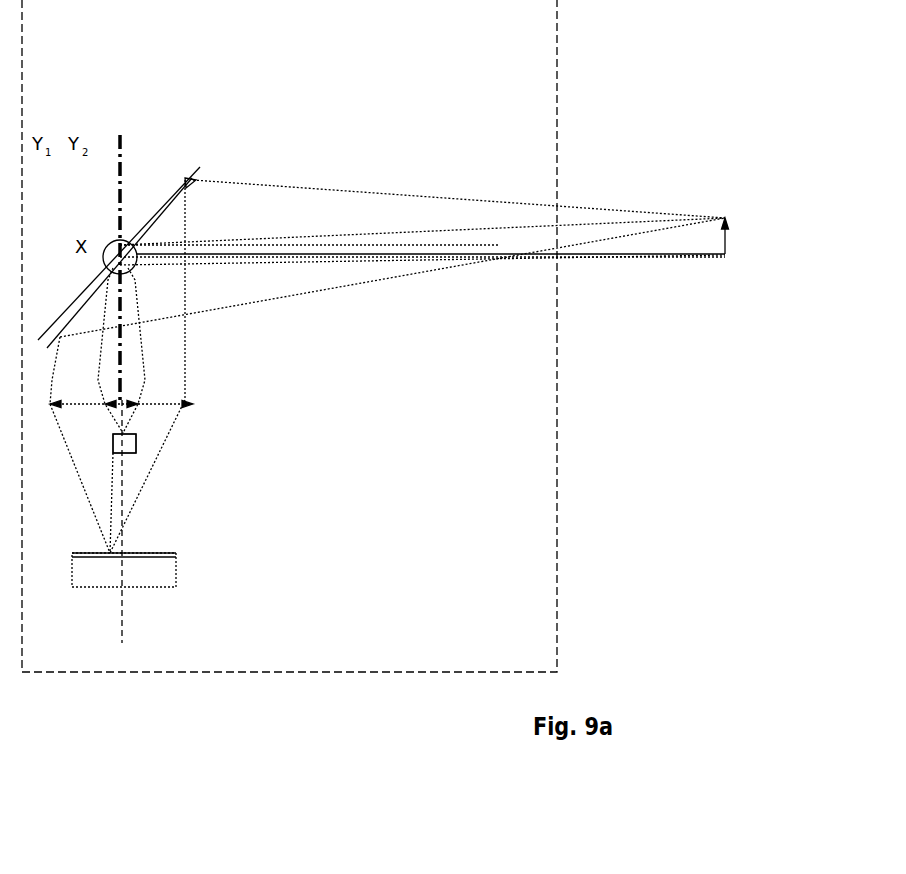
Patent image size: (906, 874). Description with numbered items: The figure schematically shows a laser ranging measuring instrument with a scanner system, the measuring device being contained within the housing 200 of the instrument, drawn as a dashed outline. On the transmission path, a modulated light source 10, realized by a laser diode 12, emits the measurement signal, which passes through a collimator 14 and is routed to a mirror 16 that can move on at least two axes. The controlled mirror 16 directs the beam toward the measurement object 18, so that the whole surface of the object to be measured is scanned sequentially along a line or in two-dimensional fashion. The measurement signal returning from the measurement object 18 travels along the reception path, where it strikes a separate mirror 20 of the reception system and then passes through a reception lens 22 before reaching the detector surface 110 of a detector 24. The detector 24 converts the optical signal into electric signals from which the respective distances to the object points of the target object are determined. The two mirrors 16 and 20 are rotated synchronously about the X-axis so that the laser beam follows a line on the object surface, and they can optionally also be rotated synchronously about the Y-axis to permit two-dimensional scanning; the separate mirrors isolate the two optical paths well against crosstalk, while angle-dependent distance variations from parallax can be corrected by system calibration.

The modulated light source 10 is at (146, 454).
The laser diode 12 is at (200, 468).
The collimator 14 is at (166, 387).
The mirror 16 is at (205, 173).
The measurement object 18 is at (670, 190).
The mirror 20 is at (188, 172).
The reception lens 22 is at (166, 410).
The detector 24 is at (166, 573).
The detector surface 110 is at (158, 548).
The housing 200 is at (300, 655).